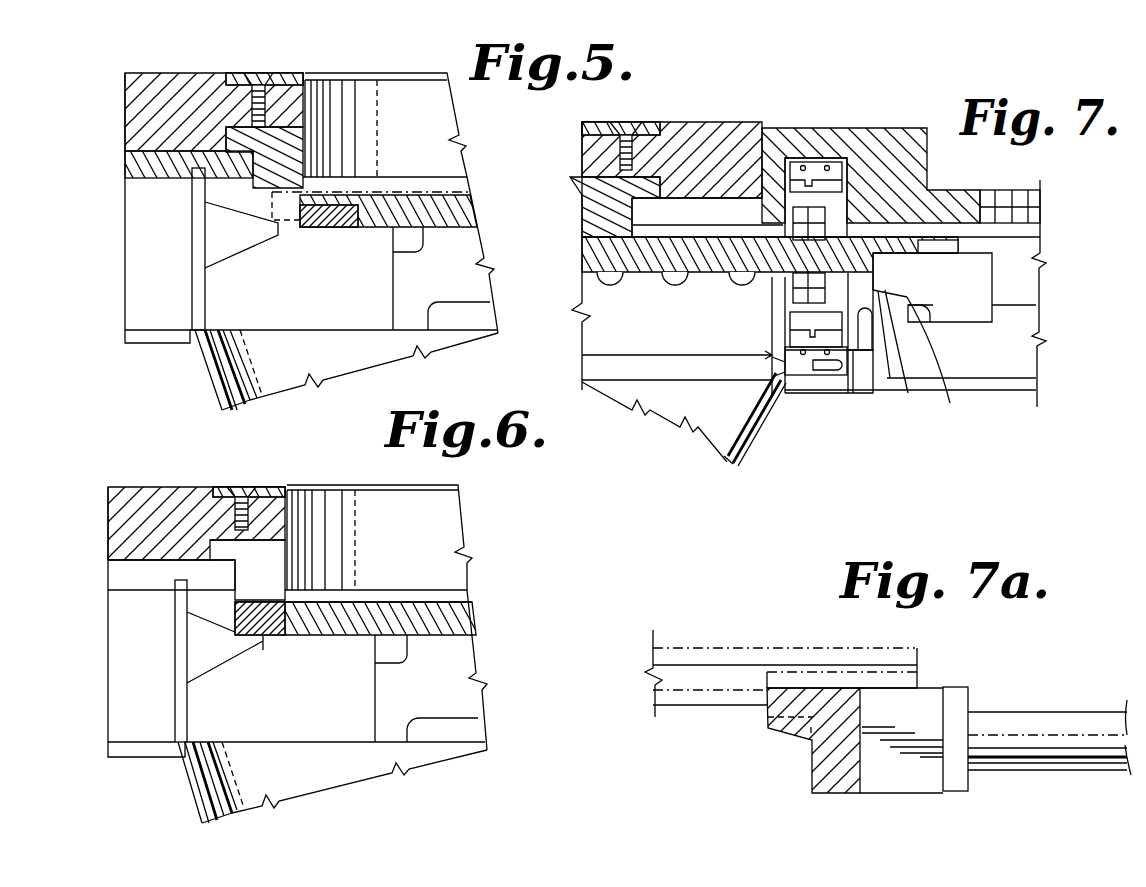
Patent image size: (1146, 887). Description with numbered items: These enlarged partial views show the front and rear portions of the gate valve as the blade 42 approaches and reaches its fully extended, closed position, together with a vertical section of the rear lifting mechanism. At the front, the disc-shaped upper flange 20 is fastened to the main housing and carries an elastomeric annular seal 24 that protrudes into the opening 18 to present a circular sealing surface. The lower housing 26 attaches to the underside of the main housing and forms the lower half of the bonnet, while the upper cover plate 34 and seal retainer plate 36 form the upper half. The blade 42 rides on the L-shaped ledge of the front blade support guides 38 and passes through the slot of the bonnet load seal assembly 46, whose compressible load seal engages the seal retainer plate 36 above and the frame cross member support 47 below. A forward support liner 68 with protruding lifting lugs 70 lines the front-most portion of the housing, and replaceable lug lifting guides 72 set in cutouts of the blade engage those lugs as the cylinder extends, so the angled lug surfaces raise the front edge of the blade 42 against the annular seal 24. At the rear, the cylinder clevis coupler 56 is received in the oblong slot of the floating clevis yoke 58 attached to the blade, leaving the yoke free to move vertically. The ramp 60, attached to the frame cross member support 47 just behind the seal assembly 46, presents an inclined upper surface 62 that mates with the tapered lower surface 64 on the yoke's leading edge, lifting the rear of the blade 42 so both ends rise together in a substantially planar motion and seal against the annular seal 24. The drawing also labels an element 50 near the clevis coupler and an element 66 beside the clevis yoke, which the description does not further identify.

In FIG. 5, the opening 18 is at (405, 103).
In FIG. 6, the opening 18 is at (397, 510).
In FIG. 5, the upper flange 20 is at (158, 87).
In FIG. 6, the upper flange 20 is at (128, 503).
In FIG. 7, the upper flange 20 is at (747, 137).
In FIG. 5, the annular seal 24 is at (285, 130).
In FIG. 6, the annular seal 24 is at (262, 550).
In FIG. 7, the annular seal 24 is at (637, 190).
In FIG. 5, the lower housing 26 is at (217, 367).
In FIG. 6, the lower housing 26 is at (212, 778).
In FIG. 7, the lower housing 26 is at (727, 428).
In FIG. 7, the upper cover plate 34 is at (1027, 198).
In FIG. 7, the seal retainer plate 36 is at (893, 153).
In FIG. 5, the front blade support guides 38 is at (448, 260).
In FIG. 6, the front blade support guides 38 is at (455, 665).
In FIG. 5, the blade 42 is at (452, 210).
In FIG. 6, the blade 42 is at (458, 622).
In FIG. 7, the blade 42 is at (592, 252).
In FIG. 7A, the blade 42 is at (775, 647).
In FIG. 7, the bonnet load seal assembly 46 is at (832, 180).
In FIG. 7, the frame cross member support 47 is at (838, 373).
In FIG. 7, the connector 50 is at (817, 162).
In FIG. 7A, the connector 50 is at (1053, 712).
In FIG. 7A, the cylinder clevis coupler 56 is at (930, 697).
In FIG. 7, the floating clevis yoke 58 is at (995, 268).
In FIG. 7A, the floating clevis yoke 58 is at (820, 670).
In FIG. 7, the ramp 60 is at (857, 302).
In FIG. 7, the inclined upper surface 62 is at (907, 395).
In FIG. 7, the tapered lower surface 64 is at (950, 403).
In FIG. 7, the notch 66 is at (918, 306).
In FIG. 5, the forward support liner 68 is at (193, 213).
In FIG. 6, the forward support liner 68 is at (175, 628).
In FIG. 5, the lifting lugs 70 is at (241, 238).
In FIG. 6, the lifting lugs 70 is at (222, 653).
In FIG. 5, the lug lifting guides 72 is at (326, 232).
In FIG. 6, the lug lifting guides 72 is at (272, 638).